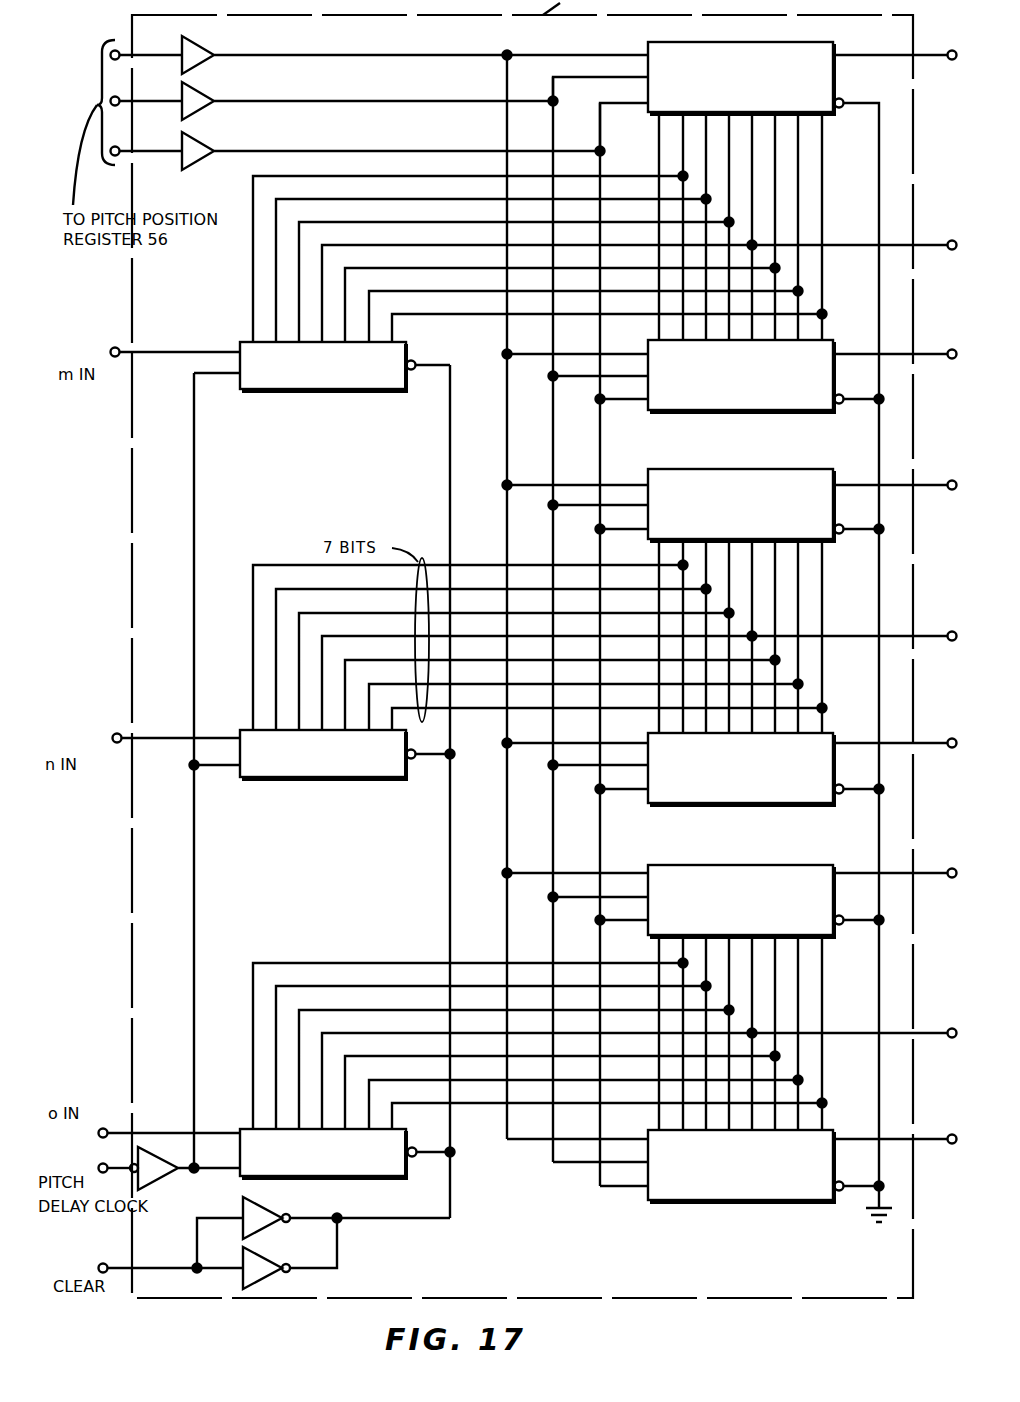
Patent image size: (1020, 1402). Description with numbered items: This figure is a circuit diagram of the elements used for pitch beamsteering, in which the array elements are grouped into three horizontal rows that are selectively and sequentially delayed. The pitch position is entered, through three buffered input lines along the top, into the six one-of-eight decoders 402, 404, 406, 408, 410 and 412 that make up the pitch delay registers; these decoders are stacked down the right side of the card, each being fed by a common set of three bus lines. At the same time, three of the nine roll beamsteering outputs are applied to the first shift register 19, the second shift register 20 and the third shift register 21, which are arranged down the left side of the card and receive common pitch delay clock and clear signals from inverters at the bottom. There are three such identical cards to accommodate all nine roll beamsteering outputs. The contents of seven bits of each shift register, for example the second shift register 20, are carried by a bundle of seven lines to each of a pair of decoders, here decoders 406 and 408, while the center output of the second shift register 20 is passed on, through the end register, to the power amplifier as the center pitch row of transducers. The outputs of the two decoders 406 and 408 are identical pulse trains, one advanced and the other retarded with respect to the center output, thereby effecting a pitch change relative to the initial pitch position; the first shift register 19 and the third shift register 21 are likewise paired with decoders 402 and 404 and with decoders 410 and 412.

The shift register SR19 19 is at (534, 282).
The shift register SR20 20 is at (535, 663).
The shift register SR21 21 is at (528, 1069).
The 1-of-8 decoder 402 is at (763, 42).
The 1-of-8 decoder 404 is at (792, 412).
The 1-of-8 decoder 406 is at (703, 468).
The 1-of-8 decoder 408 is at (780, 806).
The 1-of-8 decoder 410 is at (690, 863).
The 1-of-8 decoder 412 is at (743, 1203).